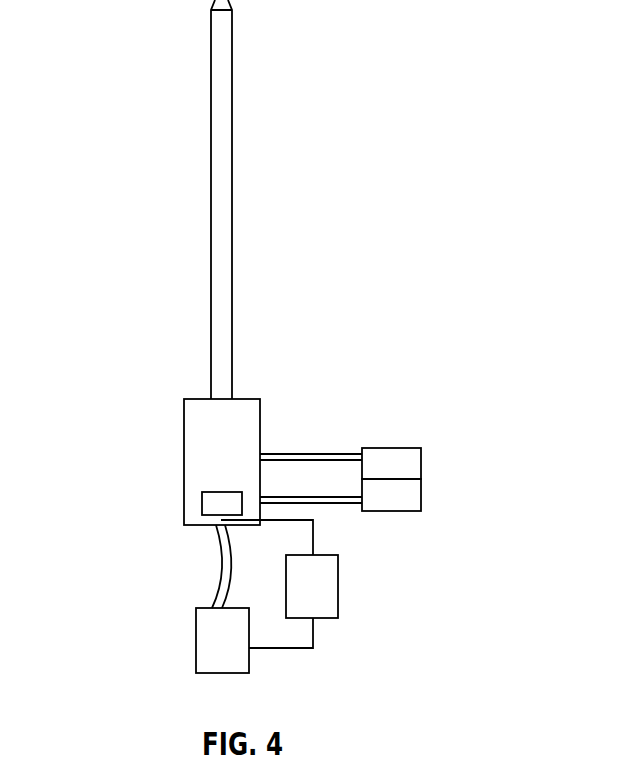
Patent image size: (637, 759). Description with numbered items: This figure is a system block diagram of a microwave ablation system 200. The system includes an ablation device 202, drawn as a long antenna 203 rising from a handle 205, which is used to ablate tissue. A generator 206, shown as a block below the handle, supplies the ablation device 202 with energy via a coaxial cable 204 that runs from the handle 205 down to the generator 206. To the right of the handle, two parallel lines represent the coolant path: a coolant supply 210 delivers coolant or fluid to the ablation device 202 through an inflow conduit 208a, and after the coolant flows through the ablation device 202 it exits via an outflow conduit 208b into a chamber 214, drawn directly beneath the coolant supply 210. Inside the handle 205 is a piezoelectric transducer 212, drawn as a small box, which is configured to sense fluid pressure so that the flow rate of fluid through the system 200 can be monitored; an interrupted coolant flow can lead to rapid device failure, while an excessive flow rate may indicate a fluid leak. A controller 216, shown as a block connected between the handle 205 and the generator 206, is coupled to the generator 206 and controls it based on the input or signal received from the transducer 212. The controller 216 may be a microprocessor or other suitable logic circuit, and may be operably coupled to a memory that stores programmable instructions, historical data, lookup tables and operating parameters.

The microwave ablation system 200 is at (340, 148).
The ablation device 202 is at (128, 213).
The antenna 203 is at (211, 126).
The coaxial cable 204 is at (221, 580).
The handle 205 is at (184, 463).
The generator 206 is at (196, 640).
The inflow conduit 208a is at (345, 452).
The outflow conduit 208b is at (345, 507).
The coolant supply 210 is at (421, 462).
The piezoelectric transducer 212 is at (202, 505).
The chamber 214 is at (421, 490).
The controller 216 is at (338, 587).